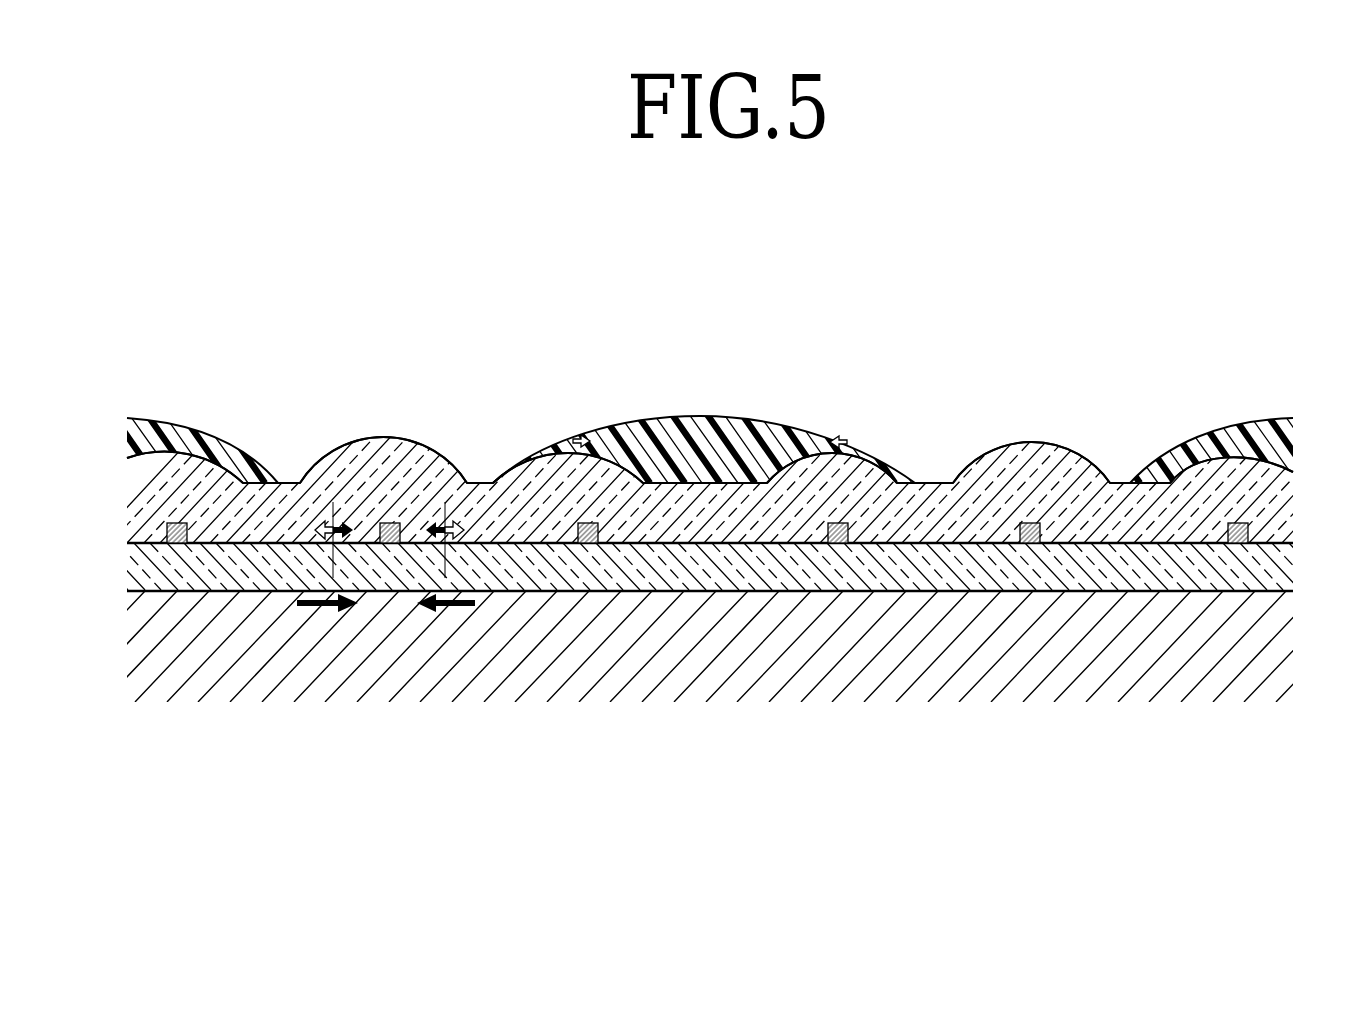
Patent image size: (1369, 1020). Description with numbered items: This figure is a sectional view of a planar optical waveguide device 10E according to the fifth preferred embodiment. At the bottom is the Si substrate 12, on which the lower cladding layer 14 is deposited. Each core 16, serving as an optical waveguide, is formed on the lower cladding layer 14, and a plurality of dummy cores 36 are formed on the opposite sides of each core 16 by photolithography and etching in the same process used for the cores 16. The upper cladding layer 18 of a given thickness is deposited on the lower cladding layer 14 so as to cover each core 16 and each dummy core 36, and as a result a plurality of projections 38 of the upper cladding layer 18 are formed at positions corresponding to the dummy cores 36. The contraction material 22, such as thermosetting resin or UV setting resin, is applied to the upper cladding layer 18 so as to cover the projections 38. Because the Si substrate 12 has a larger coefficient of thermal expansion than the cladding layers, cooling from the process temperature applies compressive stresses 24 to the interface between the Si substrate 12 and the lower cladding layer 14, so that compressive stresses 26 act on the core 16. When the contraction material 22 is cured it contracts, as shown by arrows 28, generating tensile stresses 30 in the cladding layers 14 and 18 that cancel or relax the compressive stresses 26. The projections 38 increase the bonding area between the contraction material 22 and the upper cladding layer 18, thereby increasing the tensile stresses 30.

The planar optical waveguide device 10E is at (887, 420).
The Si substrate 12 is at (705, 670).
The lower cladding layer 14 is at (1268, 575).
The core 16 is at (388, 522).
The upper cladding layer 18 is at (1265, 500).
The contraction material 22 is at (145, 418).
The compressive stresses 24 is at (315, 610).
The compressive stresses 26 is at (345, 518).
The arrows 28 is at (573, 435).
The tensile stresses 30 is at (320, 525).
The dummy core 36 is at (167, 530).
The projections 38 is at (190, 462).